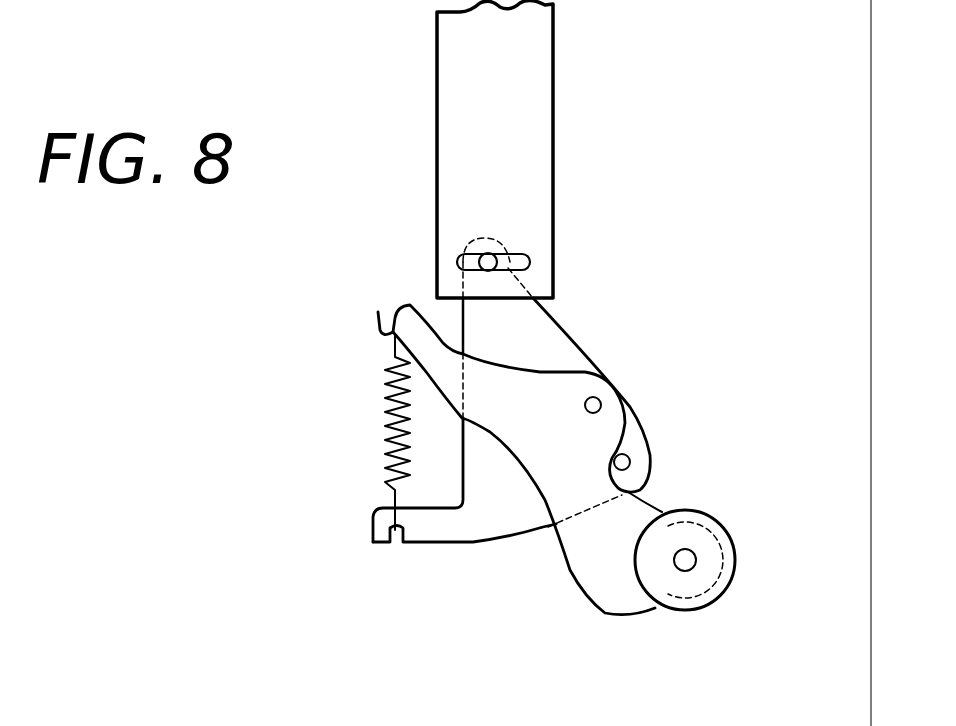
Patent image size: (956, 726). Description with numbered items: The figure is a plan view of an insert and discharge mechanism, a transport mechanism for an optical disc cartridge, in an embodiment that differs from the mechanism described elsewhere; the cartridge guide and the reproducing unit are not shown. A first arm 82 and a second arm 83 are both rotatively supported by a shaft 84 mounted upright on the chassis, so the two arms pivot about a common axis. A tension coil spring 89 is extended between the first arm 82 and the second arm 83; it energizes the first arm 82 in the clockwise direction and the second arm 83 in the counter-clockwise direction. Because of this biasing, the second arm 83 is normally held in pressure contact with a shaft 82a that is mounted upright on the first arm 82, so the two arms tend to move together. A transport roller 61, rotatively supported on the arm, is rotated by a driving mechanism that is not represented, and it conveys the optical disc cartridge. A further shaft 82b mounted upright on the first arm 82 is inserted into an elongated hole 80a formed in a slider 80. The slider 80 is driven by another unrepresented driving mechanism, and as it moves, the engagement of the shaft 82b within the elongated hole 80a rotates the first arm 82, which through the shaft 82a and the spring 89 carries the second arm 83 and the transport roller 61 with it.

The slider 80 is at (555, 60).
The elongated hole 80a is at (530, 260).
The first arm 82 is at (493, 545).
The shaft 82a is at (630, 462).
The shaft 82b is at (486, 252).
The second arm 83 is at (655, 505).
The shaft 84 is at (598, 400).
The tension coil spring 89 is at (388, 440).
The transport roller 61 is at (740, 552).